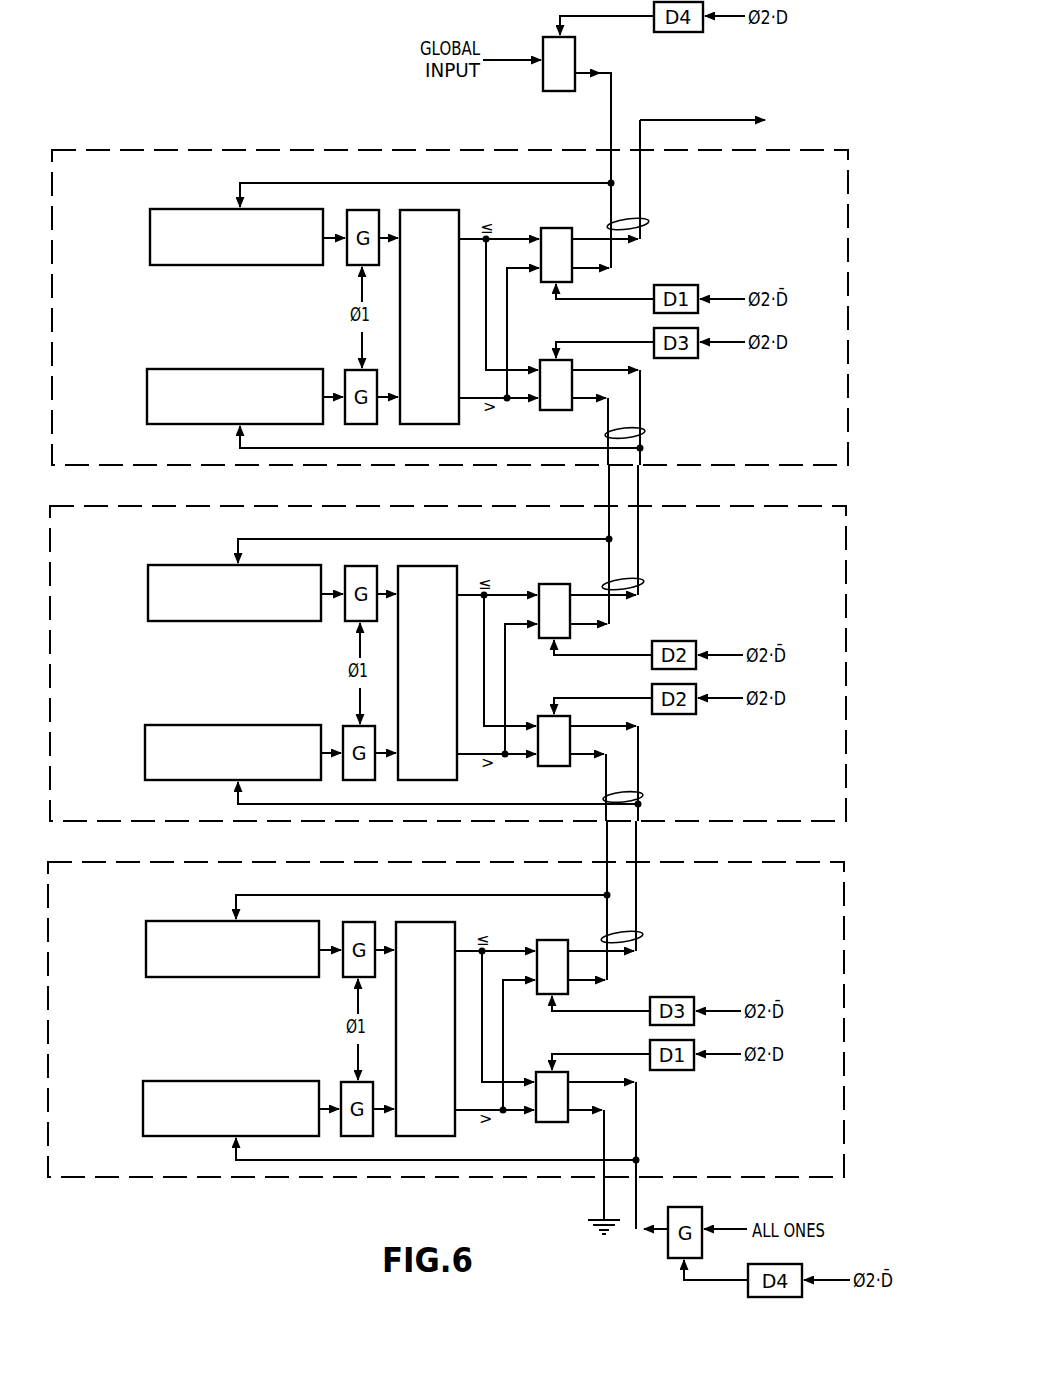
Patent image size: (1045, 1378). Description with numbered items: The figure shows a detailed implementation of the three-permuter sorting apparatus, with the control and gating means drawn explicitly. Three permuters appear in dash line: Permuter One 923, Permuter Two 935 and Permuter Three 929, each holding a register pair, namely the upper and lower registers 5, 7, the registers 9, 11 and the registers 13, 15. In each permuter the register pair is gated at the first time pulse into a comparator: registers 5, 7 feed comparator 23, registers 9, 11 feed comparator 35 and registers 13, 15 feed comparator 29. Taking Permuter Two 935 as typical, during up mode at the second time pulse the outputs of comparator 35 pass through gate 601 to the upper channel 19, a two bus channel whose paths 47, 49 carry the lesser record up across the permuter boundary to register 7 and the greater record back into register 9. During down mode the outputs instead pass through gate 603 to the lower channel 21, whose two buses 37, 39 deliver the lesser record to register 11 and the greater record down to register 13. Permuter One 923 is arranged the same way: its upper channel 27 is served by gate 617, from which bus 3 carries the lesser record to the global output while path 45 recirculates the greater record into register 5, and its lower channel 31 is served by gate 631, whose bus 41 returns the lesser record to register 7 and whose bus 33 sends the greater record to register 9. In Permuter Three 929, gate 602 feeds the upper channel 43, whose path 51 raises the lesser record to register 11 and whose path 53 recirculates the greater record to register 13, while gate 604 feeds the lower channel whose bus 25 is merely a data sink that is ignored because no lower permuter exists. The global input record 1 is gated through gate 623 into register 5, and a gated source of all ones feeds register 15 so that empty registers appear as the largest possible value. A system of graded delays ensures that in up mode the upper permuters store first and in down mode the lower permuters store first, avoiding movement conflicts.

The input record 1 is at (580, 76).
The bus of upper channel 3 is at (689, 120).
The upper register of Permuter One 5 is at (196, 209).
The lower register of Permuter One 7 is at (197, 369).
The upper register of Permuter Two 9 is at (234, 579).
The lower register of Permuter Two 11 is at (233, 740).
The upper register of Permuter Three 13 is at (232, 935).
The lower register of Permuter Three 15 is at (231, 1096).
The upper channel of Permuter Two 19 is at (624, 582).
The lower channel of Permuter Two 21 is at (644, 794).
The comparator of Permuter One 23 is at (461, 226).
The bus of lower channel of comparator 29 25 is at (588, 1172).
The upper channel of Permuter One 27 is at (645, 224).
The comparator of Permuter Three 29 is at (426, 1017).
The lower channel of Permuter One 31 is at (645, 433).
The bus of lower channel 31 33 is at (609, 412).
The comparator of Permuter Two 35 is at (447, 667).
The output line of gate 603 37 is at (621, 773).
The output line of gate 603 lower 39 is at (589, 787).
The path of lower channel 31 41 is at (641, 383).
The upper channel of Permuter Three 43 is at (624, 934).
The path of upper channel 27 45 is at (611, 196).
The path of upper channel 19 47 is at (656, 530).
The path of upper channel 19 49 is at (589, 544).
The path of upper channel 43 51 is at (653, 886).
The path of upper channel 43 53 is at (587, 900).
The gate 601 is at (556, 596).
The gate of permuter three 602 is at (540, 948).
The gate 603 is at (554, 757).
The gate of permuter three lower 604 is at (545, 1116).
The gate 617 is at (553, 228).
The gate 623 is at (540, 91).
The gate 631 is at (551, 410).
The Permuter One 923 is at (107, 150).
The Permuter Three 929 is at (446, 1006).
The Permuter Two 935 is at (448, 650).